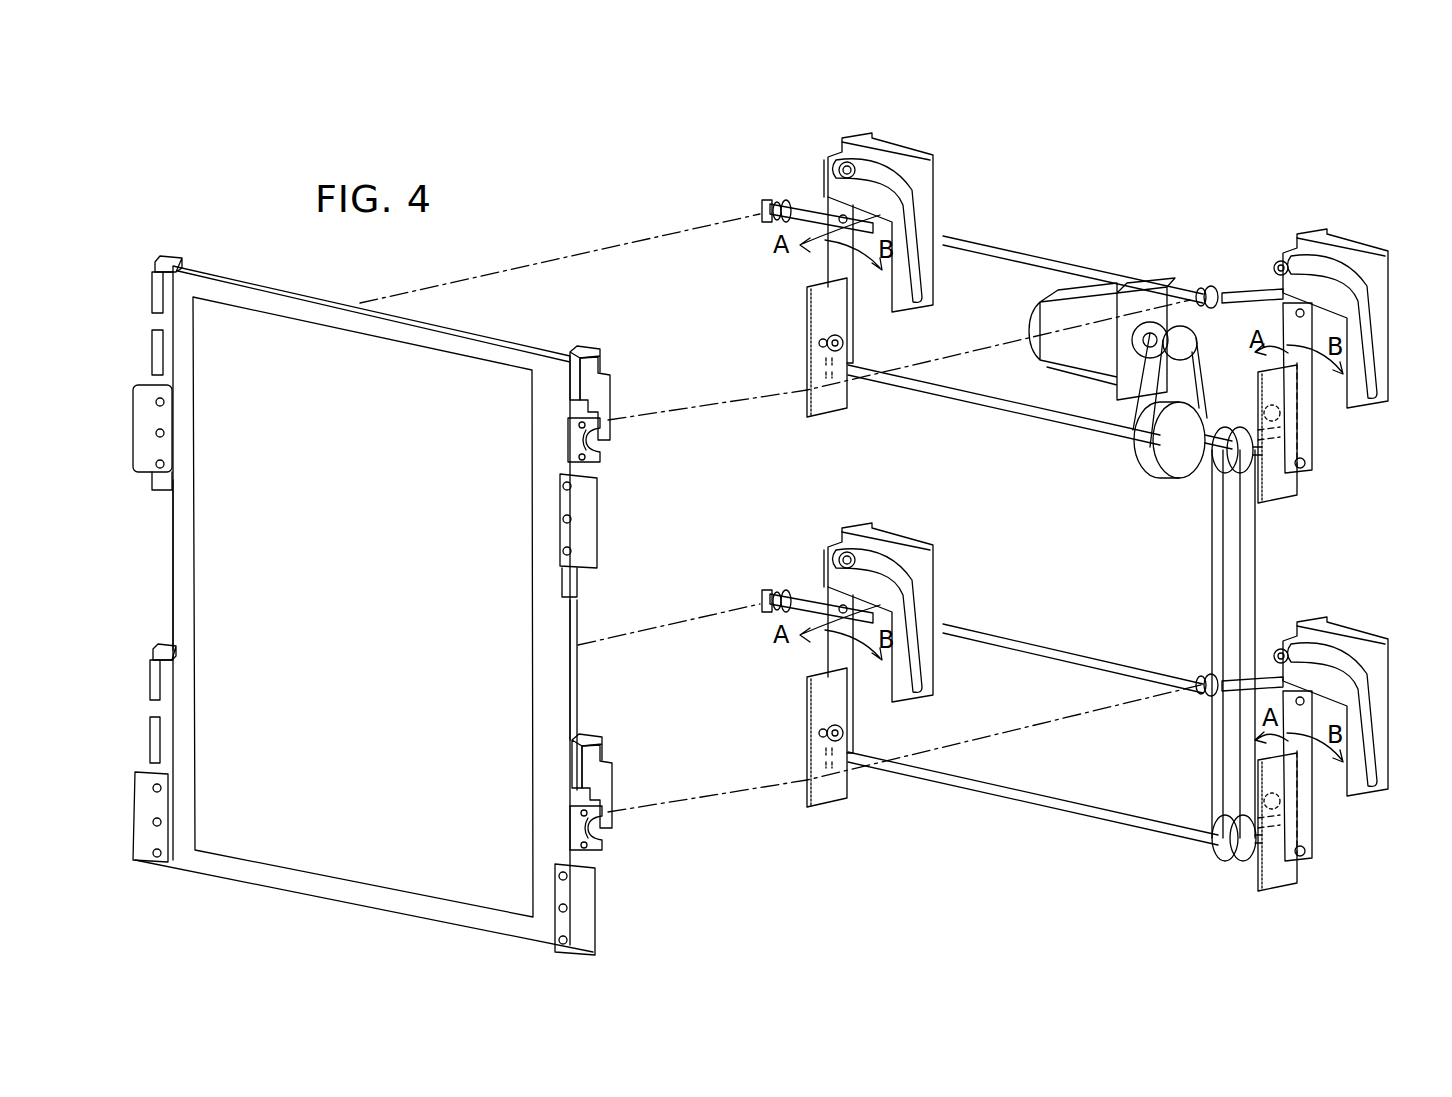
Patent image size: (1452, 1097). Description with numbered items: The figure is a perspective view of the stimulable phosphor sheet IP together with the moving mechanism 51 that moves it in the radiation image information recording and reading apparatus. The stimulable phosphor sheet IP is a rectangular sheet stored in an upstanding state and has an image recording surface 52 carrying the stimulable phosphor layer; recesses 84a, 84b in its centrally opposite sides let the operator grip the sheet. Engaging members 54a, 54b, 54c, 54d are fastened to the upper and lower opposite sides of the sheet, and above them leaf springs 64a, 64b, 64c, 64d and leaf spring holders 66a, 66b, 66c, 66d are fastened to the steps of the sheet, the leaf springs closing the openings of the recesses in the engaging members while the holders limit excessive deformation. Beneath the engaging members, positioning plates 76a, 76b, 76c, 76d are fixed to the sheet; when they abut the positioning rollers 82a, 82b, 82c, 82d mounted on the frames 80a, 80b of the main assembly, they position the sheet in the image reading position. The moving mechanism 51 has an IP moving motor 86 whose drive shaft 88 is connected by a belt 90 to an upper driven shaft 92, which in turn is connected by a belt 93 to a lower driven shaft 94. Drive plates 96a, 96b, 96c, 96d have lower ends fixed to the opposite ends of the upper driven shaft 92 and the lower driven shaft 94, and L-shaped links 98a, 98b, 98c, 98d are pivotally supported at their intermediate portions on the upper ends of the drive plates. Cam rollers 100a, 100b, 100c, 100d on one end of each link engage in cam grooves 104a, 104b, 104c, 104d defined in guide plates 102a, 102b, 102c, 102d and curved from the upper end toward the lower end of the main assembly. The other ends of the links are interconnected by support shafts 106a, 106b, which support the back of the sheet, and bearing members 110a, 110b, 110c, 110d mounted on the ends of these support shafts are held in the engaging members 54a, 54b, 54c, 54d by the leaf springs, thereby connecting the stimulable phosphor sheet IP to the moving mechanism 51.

The moving mechanism 51 is at (1154, 170).
The image recording surface 52 is at (300, 866).
The stimulable phosphor sheet IP is at (294, 302).
The engaging member 54a is at (568, 447).
The engaging member 54b is at (153, 358).
The engaging member 54c is at (543, 828).
The engaging member 54d is at (152, 747).
The leaf spring 64a is at (598, 352).
The leaf spring 64b is at (166, 260).
The leaf spring 64c is at (613, 751).
The leaf spring 64d is at (164, 650).
The leaf spring holder 66a is at (608, 385).
The leaf spring holder 66b is at (152, 296).
The leaf spring holder 66c is at (625, 786).
The leaf spring holder 66d is at (150, 681).
The positioning plate 76a is at (560, 510).
The positioning plate 76b is at (150, 422).
The positioning plate 76c is at (556, 884).
The positioning plate 76d is at (148, 812).
The frame 80a is at (1274, 500).
The frame 80b is at (824, 408).
The positioning roller 82a is at (1258, 400).
The positioning roller 82b is at (840, 335).
The positioning roller 82c is at (1219, 803).
The positioning roller 82d is at (859, 707).
The recess 84a is at (578, 668).
The recess 84b is at (173, 568).
The IP moving motor 86 is at (1056, 350).
The drive shaft 88 is at (1197, 342).
The belt 90 is at (1140, 384).
The upper driven shaft 92 is at (950, 400).
The belt 93 is at (1212, 572).
The lower driven shaft 94 is at (1033, 798).
The drive plate 96a is at (1283, 357).
The drive plate 96b is at (828, 265).
The drive plate 96c is at (1360, 776).
The drive plate 96d is at (809, 670).
The L-shaped link 98a is at (1262, 290).
The L-shaped link 98b is at (815, 200).
The L-shaped link 98c is at (1220, 704).
The L-shaped link 98d is at (820, 577).
The cam roller 100a is at (1274, 262).
The cam roller 100b is at (858, 170).
The cam roller 100c is at (1284, 625).
The cam roller 100d is at (902, 545).
The guide plate 102a is at (1370, 268).
The guide plate 102b is at (920, 178).
The guide plate 102c is at (1367, 706).
The guide plate 102d is at (913, 612).
The cam groove 104a is at (1357, 288).
The cam groove 104b is at (905, 195).
The cam groove 104c is at (1370, 715).
The cam groove 104d is at (918, 621).
The support shaft 106a is at (983, 254).
The support shaft 106b is at (1073, 658).
The bearing member 110a is at (1203, 286).
The bearing member 110b is at (780, 202).
The bearing member 110c is at (1186, 663).
The bearing member 110d is at (763, 585).